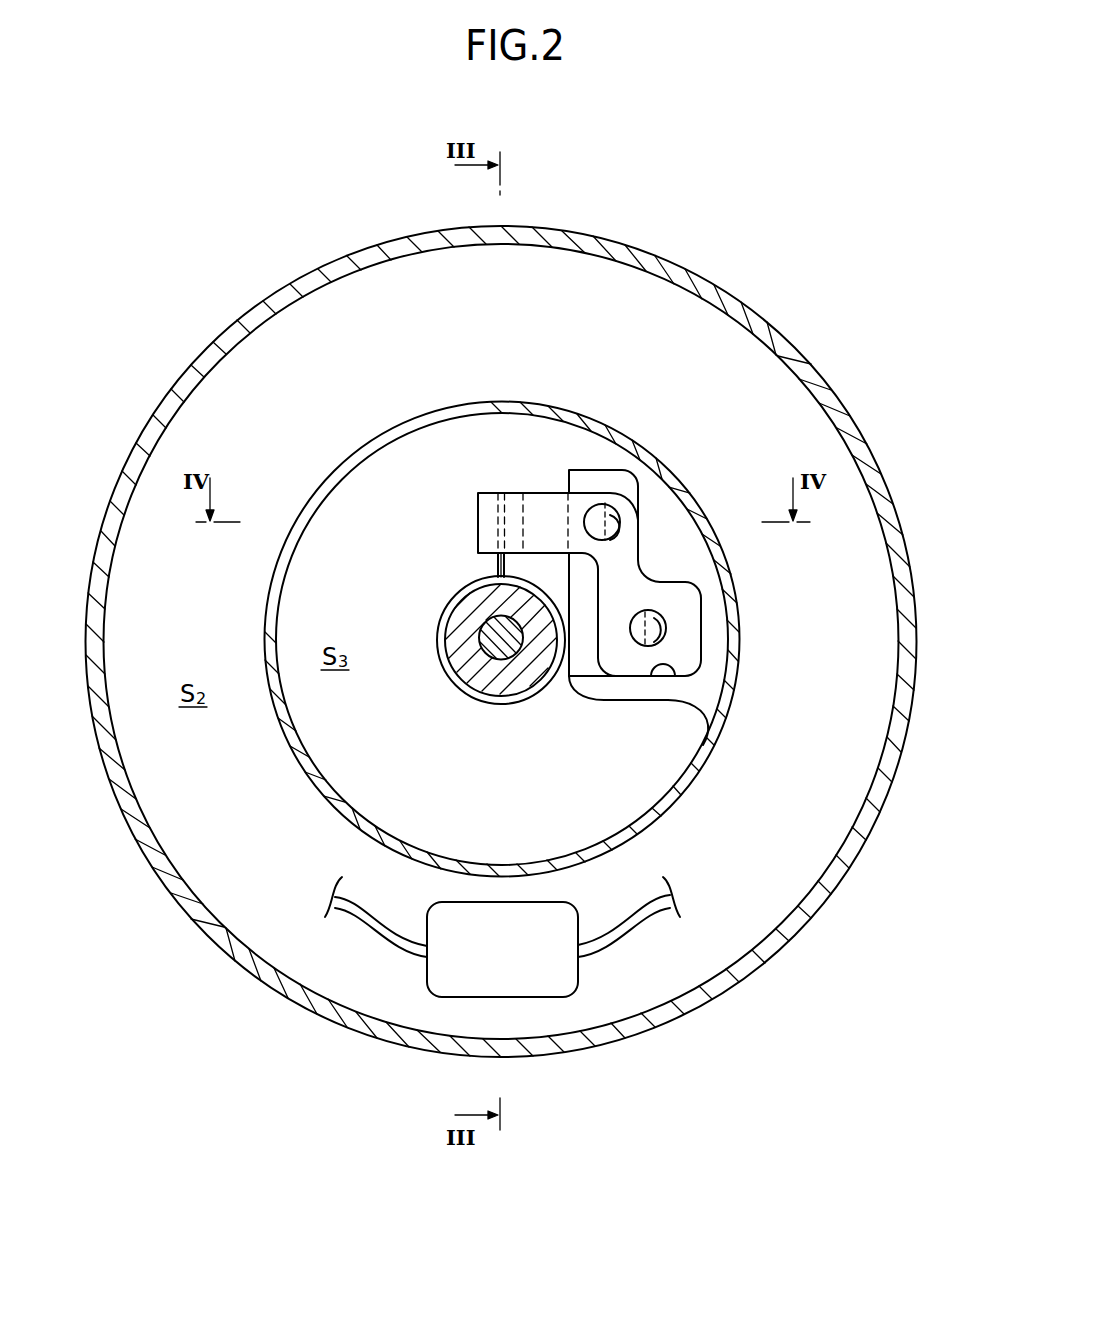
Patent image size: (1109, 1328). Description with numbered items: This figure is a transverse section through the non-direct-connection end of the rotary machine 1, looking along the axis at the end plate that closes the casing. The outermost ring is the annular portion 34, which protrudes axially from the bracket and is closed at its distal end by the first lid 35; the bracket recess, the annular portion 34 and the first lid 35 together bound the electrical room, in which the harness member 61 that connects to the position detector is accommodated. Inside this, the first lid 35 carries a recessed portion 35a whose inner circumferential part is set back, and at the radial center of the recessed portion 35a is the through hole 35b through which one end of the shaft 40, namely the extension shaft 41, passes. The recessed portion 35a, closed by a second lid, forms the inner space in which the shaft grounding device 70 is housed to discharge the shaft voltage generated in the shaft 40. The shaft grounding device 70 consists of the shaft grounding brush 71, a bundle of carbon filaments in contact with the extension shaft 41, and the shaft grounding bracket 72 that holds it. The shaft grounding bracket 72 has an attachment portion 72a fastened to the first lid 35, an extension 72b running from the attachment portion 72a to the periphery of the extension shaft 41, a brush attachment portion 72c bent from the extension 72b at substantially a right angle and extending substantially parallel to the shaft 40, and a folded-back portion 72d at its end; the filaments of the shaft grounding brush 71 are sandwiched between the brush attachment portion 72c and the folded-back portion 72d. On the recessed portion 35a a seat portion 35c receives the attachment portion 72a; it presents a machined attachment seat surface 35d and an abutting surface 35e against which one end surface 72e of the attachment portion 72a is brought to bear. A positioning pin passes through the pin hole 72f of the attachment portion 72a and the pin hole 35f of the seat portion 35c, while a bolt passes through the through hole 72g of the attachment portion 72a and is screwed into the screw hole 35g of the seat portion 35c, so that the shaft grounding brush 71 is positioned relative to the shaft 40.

The rotary machine 1 is at (717, 190).
The annular portion 34 is at (632, 707).
The first lid 35 is at (581, 700).
The recessed portion 35a is at (660, 820).
The through hole 35b is at (457, 685).
The seat portion 35c is at (652, 678).
The attachment seat surface 35d is at (670, 572).
The abutting surface 35e is at (642, 677).
The pin hole 35f is at (607, 533).
The screw hole 35g is at (648, 636).
The shaft 40 is at (307, 768).
The extension shaft 41 is at (458, 653).
The harness member 61 is at (428, 975).
The shaft grounding device 70 is at (464, 517).
The shaft grounding brush 71 is at (498, 563).
The shaft grounding bracket 72 is at (822, 237).
The attachment portion 72a is at (642, 520).
The extension 72b is at (532, 490).
The brush attachment portion 72c is at (478, 496).
The folded-back portion 72d is at (522, 515).
The one end surface 72e is at (708, 710).
The pin hole 72f is at (640, 537).
The through hole 72g is at (666, 633).